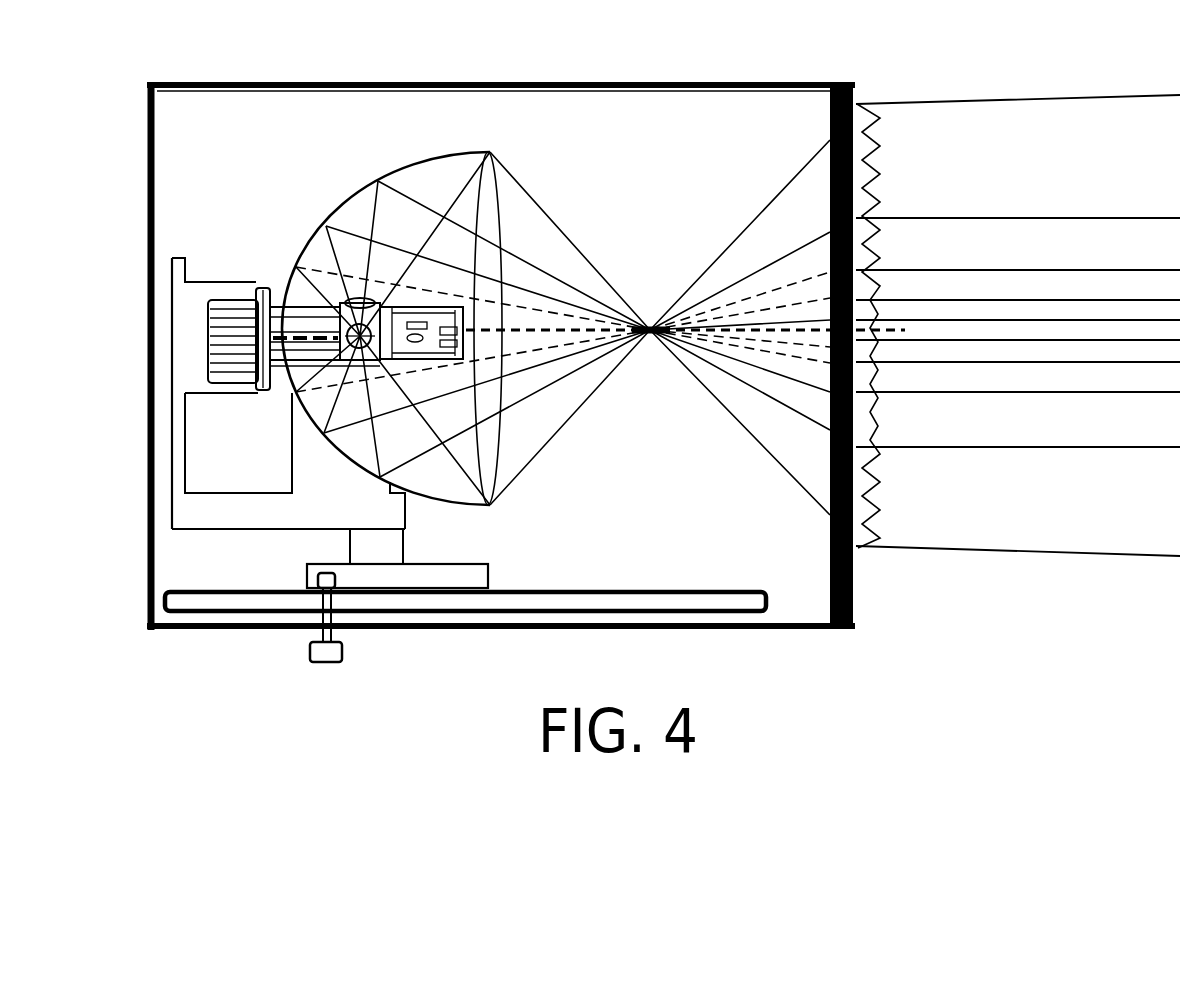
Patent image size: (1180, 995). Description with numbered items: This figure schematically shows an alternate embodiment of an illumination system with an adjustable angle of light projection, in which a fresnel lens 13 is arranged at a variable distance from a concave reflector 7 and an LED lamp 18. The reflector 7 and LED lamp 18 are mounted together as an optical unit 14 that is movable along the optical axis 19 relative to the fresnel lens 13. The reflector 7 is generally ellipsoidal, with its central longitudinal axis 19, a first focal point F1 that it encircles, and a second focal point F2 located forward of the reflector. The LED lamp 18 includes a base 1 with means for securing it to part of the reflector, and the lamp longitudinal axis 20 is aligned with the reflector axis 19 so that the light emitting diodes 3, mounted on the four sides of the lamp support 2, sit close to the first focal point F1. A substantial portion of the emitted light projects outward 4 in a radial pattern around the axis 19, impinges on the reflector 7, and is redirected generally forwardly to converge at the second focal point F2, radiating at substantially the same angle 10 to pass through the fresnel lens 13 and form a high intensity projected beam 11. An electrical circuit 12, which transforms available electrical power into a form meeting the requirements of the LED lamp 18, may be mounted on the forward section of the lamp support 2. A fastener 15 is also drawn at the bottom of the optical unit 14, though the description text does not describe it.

The base 1 is at (218, 327).
The lamp support 2 is at (297, 360).
The light emitting diodes 3 is at (360, 320).
The outward projection of light 4 is at (358, 310).
The concave reflector 7 is at (464, 153).
The angle of radiation from second focal point 10 is at (781, 193).
The projected beam 11 is at (1012, 550).
The electrical circuit 12 is at (406, 345).
The fresnel lens 13 is at (877, 188).
The optical unit 14 is at (297, 503).
The fastening screw 15 is at (315, 640).
The LED lamp 18 is at (265, 307).
The optical axis 19 is at (527, 337).
The lamp longitudinal axis 20 is at (283, 358).
The first focal point F1 is at (362, 337).
The second focal point F2 is at (652, 327).